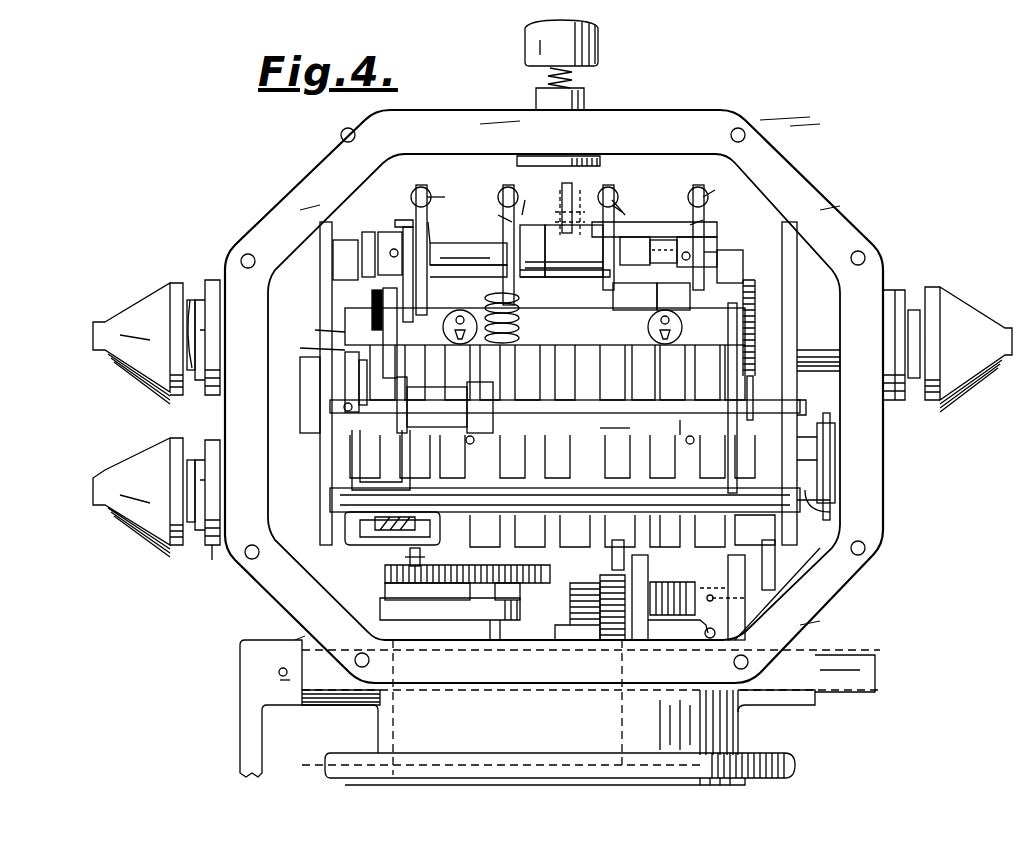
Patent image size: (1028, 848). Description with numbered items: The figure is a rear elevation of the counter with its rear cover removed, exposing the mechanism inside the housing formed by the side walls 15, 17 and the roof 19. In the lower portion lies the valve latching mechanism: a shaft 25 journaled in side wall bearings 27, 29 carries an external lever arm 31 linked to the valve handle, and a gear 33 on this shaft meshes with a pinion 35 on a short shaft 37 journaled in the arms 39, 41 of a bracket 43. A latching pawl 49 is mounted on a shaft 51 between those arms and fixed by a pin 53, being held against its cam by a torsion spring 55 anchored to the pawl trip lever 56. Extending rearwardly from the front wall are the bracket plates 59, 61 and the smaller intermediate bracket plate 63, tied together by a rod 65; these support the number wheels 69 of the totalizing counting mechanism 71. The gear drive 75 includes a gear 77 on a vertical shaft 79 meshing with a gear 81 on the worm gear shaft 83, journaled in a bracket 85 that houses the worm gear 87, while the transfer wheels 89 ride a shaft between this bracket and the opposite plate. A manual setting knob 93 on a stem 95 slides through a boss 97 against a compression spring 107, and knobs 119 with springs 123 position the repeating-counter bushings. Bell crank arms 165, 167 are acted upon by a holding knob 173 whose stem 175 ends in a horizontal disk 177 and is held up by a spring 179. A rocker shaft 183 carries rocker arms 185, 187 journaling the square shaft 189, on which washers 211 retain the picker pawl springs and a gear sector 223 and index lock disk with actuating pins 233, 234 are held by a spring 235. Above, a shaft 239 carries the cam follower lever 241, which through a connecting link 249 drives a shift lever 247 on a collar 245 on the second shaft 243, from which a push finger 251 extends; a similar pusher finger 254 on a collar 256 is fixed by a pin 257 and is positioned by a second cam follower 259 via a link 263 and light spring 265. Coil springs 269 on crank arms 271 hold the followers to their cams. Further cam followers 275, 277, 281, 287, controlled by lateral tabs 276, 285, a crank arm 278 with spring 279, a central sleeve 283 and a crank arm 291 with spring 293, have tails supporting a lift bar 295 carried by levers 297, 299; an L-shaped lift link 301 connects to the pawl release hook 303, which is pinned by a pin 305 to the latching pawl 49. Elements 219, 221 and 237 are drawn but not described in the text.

The side wall 15 is at (884, 468).
The side wall 17 is at (222, 405).
The roof 19 is at (448, 110).
The shaft 25 is at (488, 690).
The side wall bearing 27 is at (783, 700).
The side wall bearing 29 is at (340, 700).
The lever arm 31 is at (245, 720).
The gear 33 is at (610, 597).
The pinion 35 is at (580, 595).
The short shaft 37 is at (672, 620).
The bracket arm 39 is at (635, 568).
The bracket arm 41 is at (730, 570).
The bracket 43 is at (670, 582).
The latching pawl 49 is at (770, 570).
The shaft 51 is at (636, 587).
The pin 53 is at (765, 600).
The biasing torsion spring 55 is at (668, 570).
The pawl trip lever 56 is at (716, 634).
The bracket plate 59 is at (798, 272).
The bracket plate 61 is at (320, 280).
The intermediate bracket plate 63 is at (562, 200).
The rod 65 is at (597, 530).
The number wheels 69 is at (675, 445).
The counting mechanism 71 is at (659, 448).
The gear drive 75 is at (467, 579).
The gear 77 is at (528, 570).
The vertical shaft 79 is at (495, 630).
The gear 81 is at (385, 575).
The worm gear shaft 83 is at (420, 556).
The bracket 85 is at (350, 545).
The worm gear 87 is at (383, 517).
The transfer wheels 89 is at (505, 470).
The manual setting knob 93 is at (150, 515).
The stem 95 is at (210, 540).
The boss 97 is at (214, 548).
The compression spring 107 is at (195, 465).
The knob 119 is at (125, 310).
The compression spring 123 is at (192, 300).
The bell crank arm 165 is at (540, 345).
The bell crank arm 167 is at (503, 188).
The holding knob 173 is at (535, 32).
The stem 175 is at (574, 84).
The horizontal disk 177 is at (588, 156).
The compression spring 179 is at (548, 75).
The rocker shaft 183 is at (555, 482).
The rocker arm 185 is at (735, 375).
The rocker arm 187 is at (315, 331).
The square shaft 189 is at (630, 318).
The washer 211 is at (680, 322).
The bracket 219 is at (835, 430).
The plate 221 is at (828, 476).
The gear sector 223 is at (397, 335).
The actuating pin 233 is at (367, 275).
The actuating pin 234 is at (345, 368).
The compression spring 235 is at (372, 300).
The bracket 237 is at (402, 447).
The shaft 239 is at (460, 250).
The cam follower lever 241 is at (428, 228).
The second shaft 243 is at (530, 415).
The collar 245 is at (375, 403).
The shift lever 247 is at (400, 402).
The connecting link 249 is at (420, 330).
The push finger 251 is at (380, 400).
The pusher finger 254 is at (311, 345).
The collar 256 is at (359, 390).
The pin 257 is at (345, 409).
The second cam follower 259 is at (495, 212).
The connecting link 263 is at (510, 362).
The compression spring 265 is at (522, 318).
The coil spring 269 is at (428, 195).
The crank arm 271 is at (450, 198).
The cam follower 275 is at (395, 224).
The lateral tab 276 is at (405, 227).
The cam follower 277 is at (706, 262).
The crank arm 278 is at (684, 214).
The tension spring 279 is at (719, 188).
The cam follower 281 is at (524, 240).
The central sleeve 283 is at (560, 277).
The lateral tab 285 is at (530, 198).
The cam follower 287 is at (605, 247).
The crank arm 291 is at (629, 211).
The tension spring 293 is at (618, 198).
The lift bar 295 is at (650, 222).
The lever 297 is at (725, 255).
The lever 299 is at (612, 252).
The lift link 301 is at (755, 295).
The pawl release hook 303 is at (750, 525).
The pin 305 is at (748, 540).